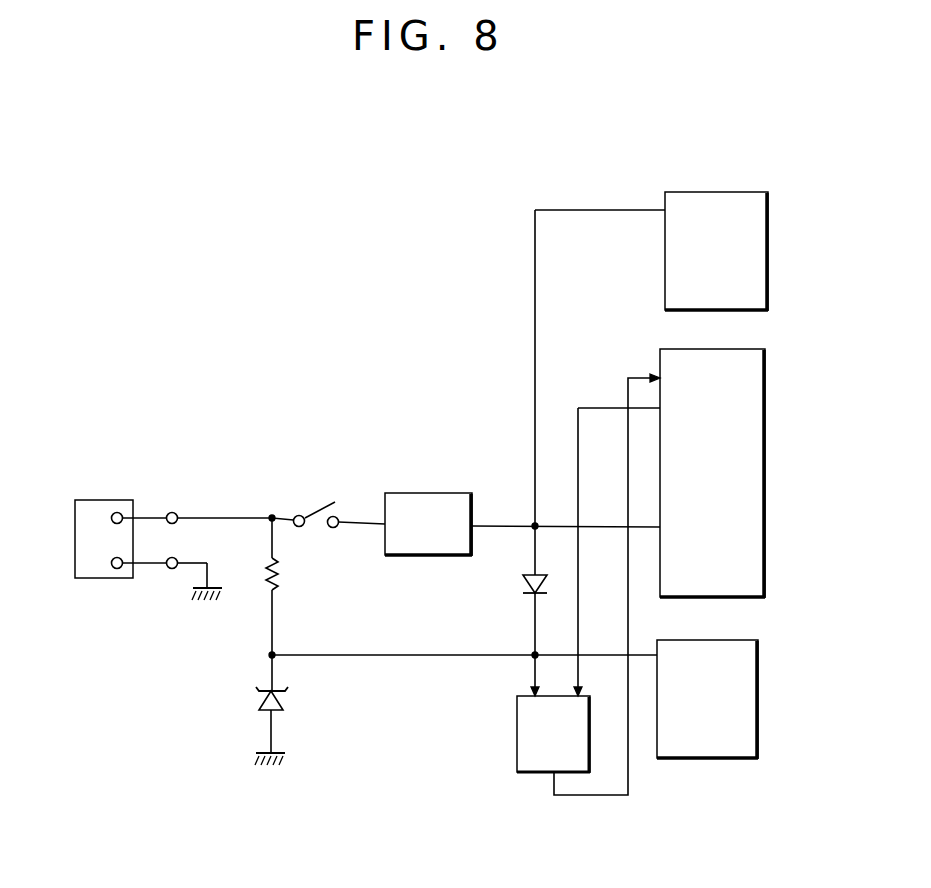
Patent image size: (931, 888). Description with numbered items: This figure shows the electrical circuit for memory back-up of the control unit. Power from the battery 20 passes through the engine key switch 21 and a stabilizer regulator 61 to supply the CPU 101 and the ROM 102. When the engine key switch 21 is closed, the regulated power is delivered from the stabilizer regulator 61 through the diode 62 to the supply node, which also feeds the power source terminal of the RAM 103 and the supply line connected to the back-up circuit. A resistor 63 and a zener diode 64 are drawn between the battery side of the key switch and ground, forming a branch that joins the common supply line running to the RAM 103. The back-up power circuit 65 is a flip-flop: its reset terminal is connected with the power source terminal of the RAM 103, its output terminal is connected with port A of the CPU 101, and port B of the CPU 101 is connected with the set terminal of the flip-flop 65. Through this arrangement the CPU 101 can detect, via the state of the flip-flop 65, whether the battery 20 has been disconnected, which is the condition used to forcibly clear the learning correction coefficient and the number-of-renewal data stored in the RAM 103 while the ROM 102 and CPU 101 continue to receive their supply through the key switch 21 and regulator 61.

The battery 20 is at (122, 500).
The engine key switch 21 is at (303, 514).
The stabilizer regulator 61 is at (447, 493).
The diode 62 is at (523, 583).
The resistor 63 is at (280, 577).
The zener diode 64 is at (284, 700).
The flip-flop 65 is at (516, 716).
The CPU 101 is at (768, 394).
The ROM 102 is at (771, 230).
The RAM 103 is at (761, 663).